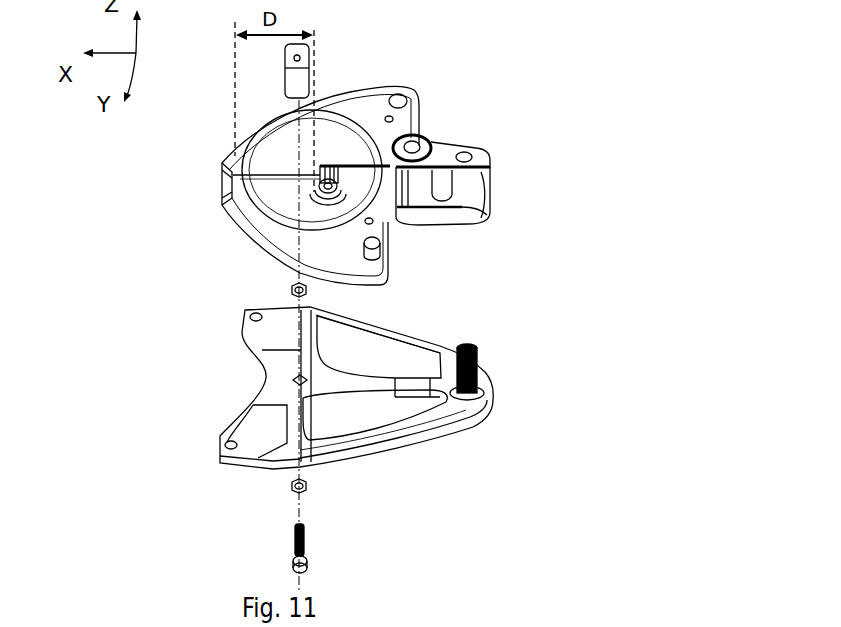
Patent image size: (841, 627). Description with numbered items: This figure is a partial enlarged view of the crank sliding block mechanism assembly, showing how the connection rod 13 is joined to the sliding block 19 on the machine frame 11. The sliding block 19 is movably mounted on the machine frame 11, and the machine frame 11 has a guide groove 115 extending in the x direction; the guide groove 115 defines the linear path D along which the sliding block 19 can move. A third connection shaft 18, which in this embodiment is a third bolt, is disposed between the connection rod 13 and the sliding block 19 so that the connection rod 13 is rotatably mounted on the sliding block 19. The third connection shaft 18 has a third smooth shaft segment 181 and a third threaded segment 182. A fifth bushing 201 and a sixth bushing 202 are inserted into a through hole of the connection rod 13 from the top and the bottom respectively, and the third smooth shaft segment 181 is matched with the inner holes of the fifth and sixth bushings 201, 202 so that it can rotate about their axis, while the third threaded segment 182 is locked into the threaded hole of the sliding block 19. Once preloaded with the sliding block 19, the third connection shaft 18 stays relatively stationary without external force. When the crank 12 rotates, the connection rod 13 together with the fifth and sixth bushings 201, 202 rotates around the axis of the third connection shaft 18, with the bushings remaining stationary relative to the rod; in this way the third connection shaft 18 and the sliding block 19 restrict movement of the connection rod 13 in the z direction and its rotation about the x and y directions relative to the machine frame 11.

The machine frame 11 is at (390, 278).
The guide groove 115 is at (230, 204).
The crank 12 is at (485, 224).
The sliding block 19 is at (311, 66).
The sixth bushing 202 is at (290, 291).
The connection rod 13 is at (440, 428).
The fifth bushing 201 is at (288, 488).
The third connection shaft 18 is at (307, 551).
The third threaded segment 182 is at (306, 540).
The third smooth shaft segment 181 is at (308, 562).